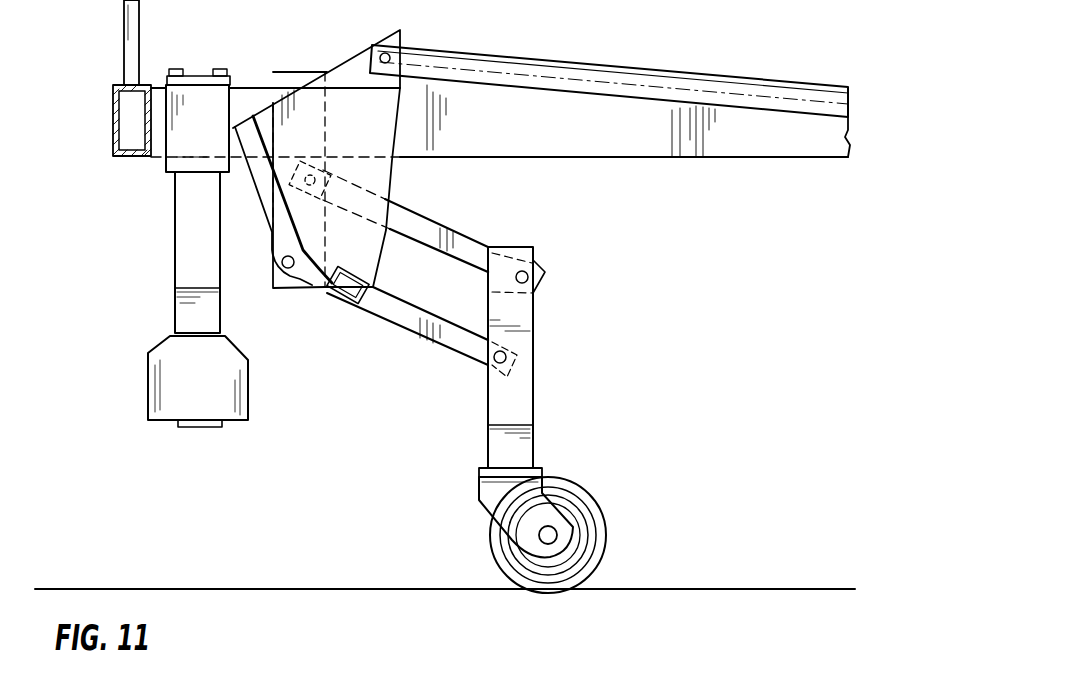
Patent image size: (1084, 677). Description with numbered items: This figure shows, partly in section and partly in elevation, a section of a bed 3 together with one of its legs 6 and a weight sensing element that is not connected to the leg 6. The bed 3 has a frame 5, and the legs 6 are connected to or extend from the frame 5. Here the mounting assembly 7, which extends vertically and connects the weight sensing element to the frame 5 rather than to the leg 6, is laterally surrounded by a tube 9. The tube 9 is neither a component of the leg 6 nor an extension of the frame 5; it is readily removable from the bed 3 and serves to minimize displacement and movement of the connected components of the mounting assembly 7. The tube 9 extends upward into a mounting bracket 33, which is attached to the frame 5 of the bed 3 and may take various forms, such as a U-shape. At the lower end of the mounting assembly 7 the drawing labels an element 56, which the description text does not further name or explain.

The bed 3 is at (637, 145).
The frame 5 is at (112, 129).
The leg 6 is at (533, 388).
The mounting assembly 7 is at (158, 283).
The tube 9 is at (175, 273).
The mounting bracket 33 is at (180, 165).
The foot 56 is at (193, 430).